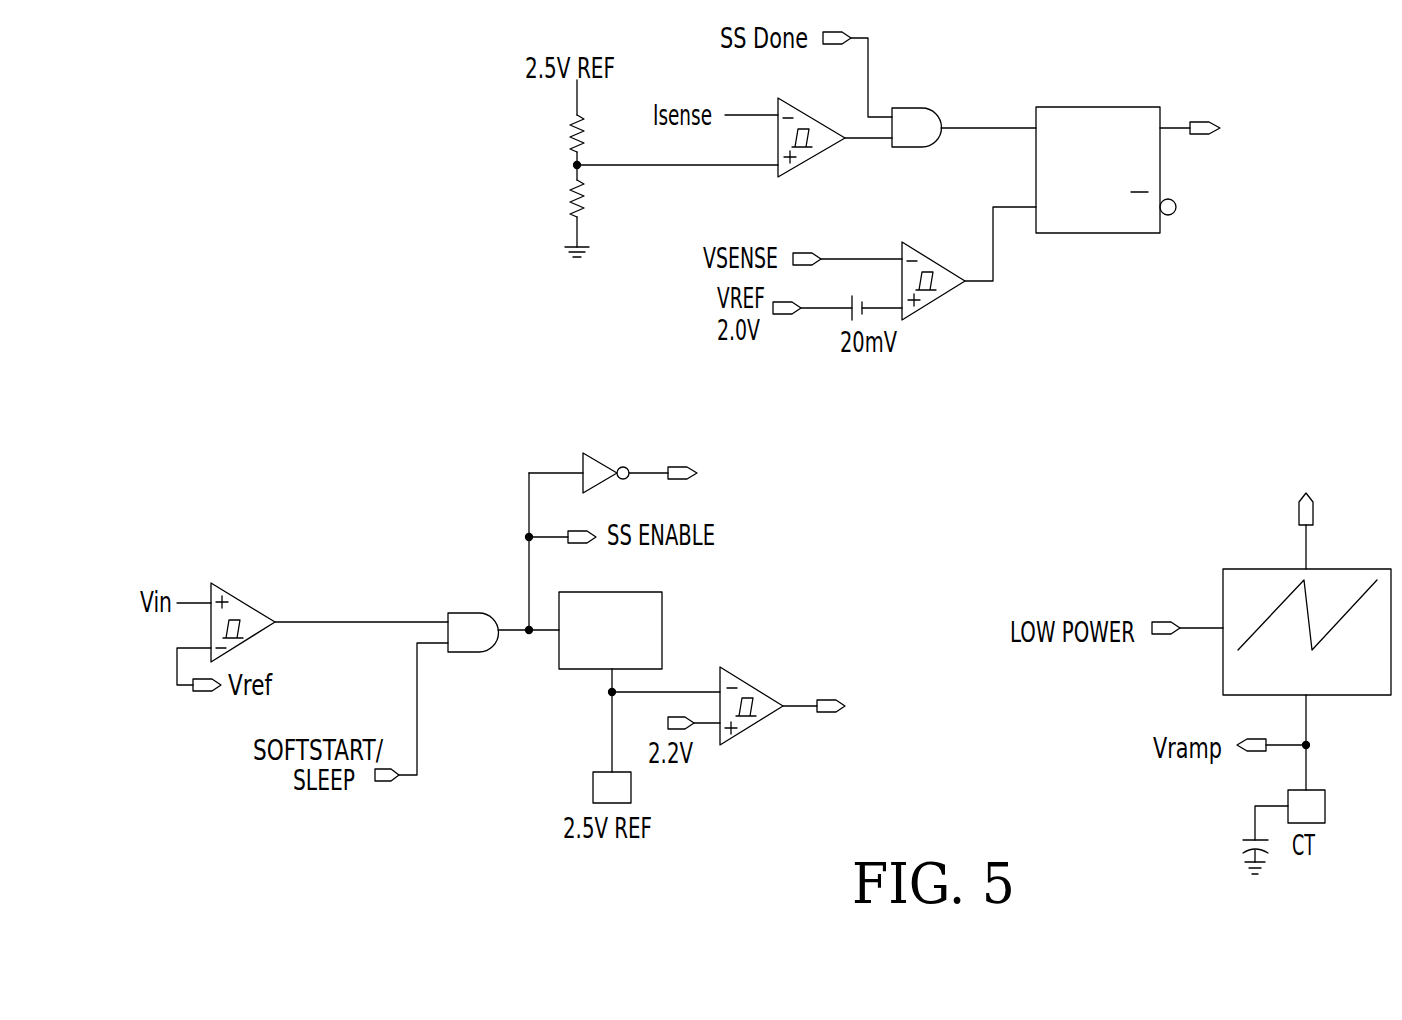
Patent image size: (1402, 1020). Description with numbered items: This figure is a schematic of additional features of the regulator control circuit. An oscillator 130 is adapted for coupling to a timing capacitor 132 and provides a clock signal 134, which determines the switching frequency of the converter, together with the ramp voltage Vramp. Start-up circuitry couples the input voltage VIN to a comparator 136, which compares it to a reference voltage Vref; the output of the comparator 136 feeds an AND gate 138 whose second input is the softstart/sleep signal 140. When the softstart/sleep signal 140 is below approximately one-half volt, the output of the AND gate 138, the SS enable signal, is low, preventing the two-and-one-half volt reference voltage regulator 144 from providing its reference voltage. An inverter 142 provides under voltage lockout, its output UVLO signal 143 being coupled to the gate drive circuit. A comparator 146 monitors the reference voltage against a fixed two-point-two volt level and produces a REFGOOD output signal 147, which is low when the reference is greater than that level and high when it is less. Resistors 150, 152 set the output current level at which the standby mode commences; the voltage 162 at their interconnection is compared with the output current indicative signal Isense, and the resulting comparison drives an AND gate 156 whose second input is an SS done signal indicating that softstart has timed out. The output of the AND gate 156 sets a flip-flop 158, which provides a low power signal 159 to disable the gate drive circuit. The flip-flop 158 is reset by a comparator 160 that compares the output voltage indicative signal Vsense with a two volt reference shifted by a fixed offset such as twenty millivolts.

The oscillator 130 is at (1328, 566).
The timing capacitor 132 is at (1243, 843).
The clock signal 134 is at (1305, 540).
The comparator 136 is at (233, 588).
The AND gate 138 is at (483, 612).
The softstart/sleep signal 140 is at (417, 712).
The inverter 142 is at (582, 467).
The UVLO signal 143 is at (648, 472).
The 2.5 V reference voltage regulator 144 is at (620, 592).
The comparator 146 is at (755, 680).
The REFGOOD output signal 147 is at (788, 710).
The resistor 150 is at (563, 135).
The resistor 152 is at (565, 197).
The AND gate 156 is at (903, 108).
The flip-flop 158 is at (1085, 106).
The low power signal 159 is at (1173, 125).
The comparator 160 is at (925, 305).
The voltage 162 is at (645, 166).